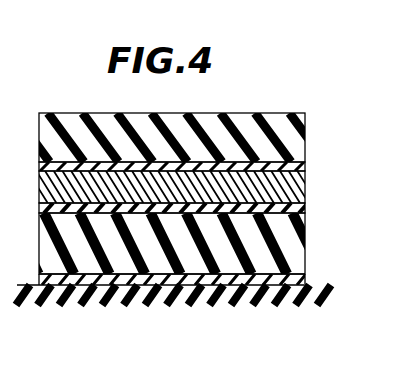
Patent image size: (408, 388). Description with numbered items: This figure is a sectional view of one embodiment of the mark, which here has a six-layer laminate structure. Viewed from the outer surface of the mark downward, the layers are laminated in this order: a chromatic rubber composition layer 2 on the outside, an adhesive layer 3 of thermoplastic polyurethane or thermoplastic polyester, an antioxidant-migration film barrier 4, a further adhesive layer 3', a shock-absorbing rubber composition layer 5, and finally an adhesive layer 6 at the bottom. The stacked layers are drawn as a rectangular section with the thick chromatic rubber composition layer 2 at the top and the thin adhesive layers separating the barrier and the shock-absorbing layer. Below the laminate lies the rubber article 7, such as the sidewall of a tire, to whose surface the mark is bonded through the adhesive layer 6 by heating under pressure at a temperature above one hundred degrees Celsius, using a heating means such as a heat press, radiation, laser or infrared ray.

The chromatic rubber composition layer 2 is at (297, 132).
The adhesive layer 3 is at (197, 158).
The antioxidant-migration film barrier 4 is at (296, 186).
The adhesive layer 3' is at (199, 218).
The shock-absorbing rubber composition layer 5 is at (293, 253).
The adhesive layer 6 is at (294, 282).
The rubber article 7 is at (280, 298).